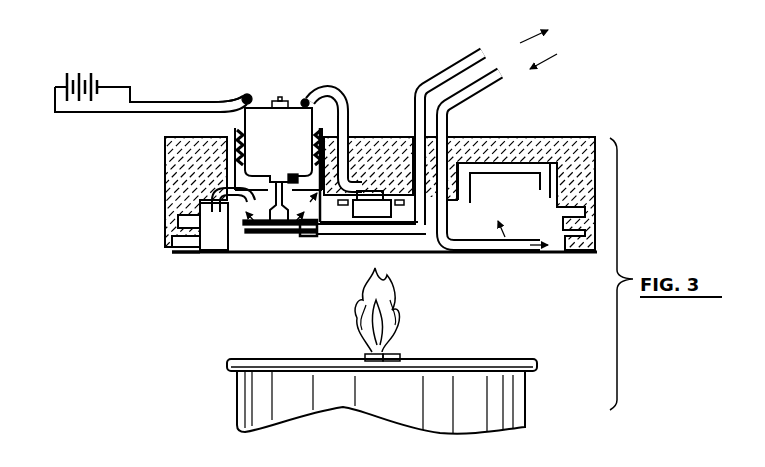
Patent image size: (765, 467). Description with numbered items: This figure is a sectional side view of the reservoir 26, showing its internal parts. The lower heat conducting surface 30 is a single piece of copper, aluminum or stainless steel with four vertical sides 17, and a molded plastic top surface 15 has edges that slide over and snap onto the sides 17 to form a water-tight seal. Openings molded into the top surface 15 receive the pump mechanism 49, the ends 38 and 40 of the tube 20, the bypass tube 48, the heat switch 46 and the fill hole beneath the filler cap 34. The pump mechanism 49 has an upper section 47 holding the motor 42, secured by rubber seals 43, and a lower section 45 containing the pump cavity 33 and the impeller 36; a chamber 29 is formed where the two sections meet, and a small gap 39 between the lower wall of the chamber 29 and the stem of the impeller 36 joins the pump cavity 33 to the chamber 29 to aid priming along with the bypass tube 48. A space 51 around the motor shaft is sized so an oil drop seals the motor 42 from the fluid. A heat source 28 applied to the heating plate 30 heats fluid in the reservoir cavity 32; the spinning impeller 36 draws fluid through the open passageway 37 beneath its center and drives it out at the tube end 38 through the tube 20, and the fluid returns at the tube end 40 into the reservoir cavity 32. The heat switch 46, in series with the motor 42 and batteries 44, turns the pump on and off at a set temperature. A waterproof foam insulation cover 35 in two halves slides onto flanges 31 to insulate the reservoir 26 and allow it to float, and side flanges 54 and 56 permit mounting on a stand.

The top surface 15 is at (400, 143).
The vertical sides 17 is at (163, 233).
The tube 20 is at (488, 165).
The reservoir 26 is at (138, 186).
The heat source 28 is at (360, 420).
The chamber 29 is at (310, 238).
The lower heat conducting surface 30 is at (476, 256).
The flanges 31 is at (170, 220).
The reservoir cavity 32 is at (515, 250).
The pump cavity 33 is at (230, 237).
The filler cap 34 is at (512, 166).
The foam insulation cover 35 is at (588, 170).
The impeller 36 is at (260, 237).
The open passageway 37 is at (283, 242).
The tube end 38 is at (355, 231).
The gap 39 is at (312, 200).
The tube end 40 is at (511, 245).
The motor 42 is at (240, 112).
The rubber seals 43 is at (250, 100).
The batteries 44 is at (82, 67).
The lower section 45 is at (227, 250).
The heat switch 46 is at (367, 191).
The upper section 47 is at (238, 152).
The bypass tube 48 is at (237, 190).
The pump mechanism 49 is at (237, 133).
The space 51 is at (293, 180).
The side flange 54 is at (577, 260).
The side flange 56 is at (173, 257).